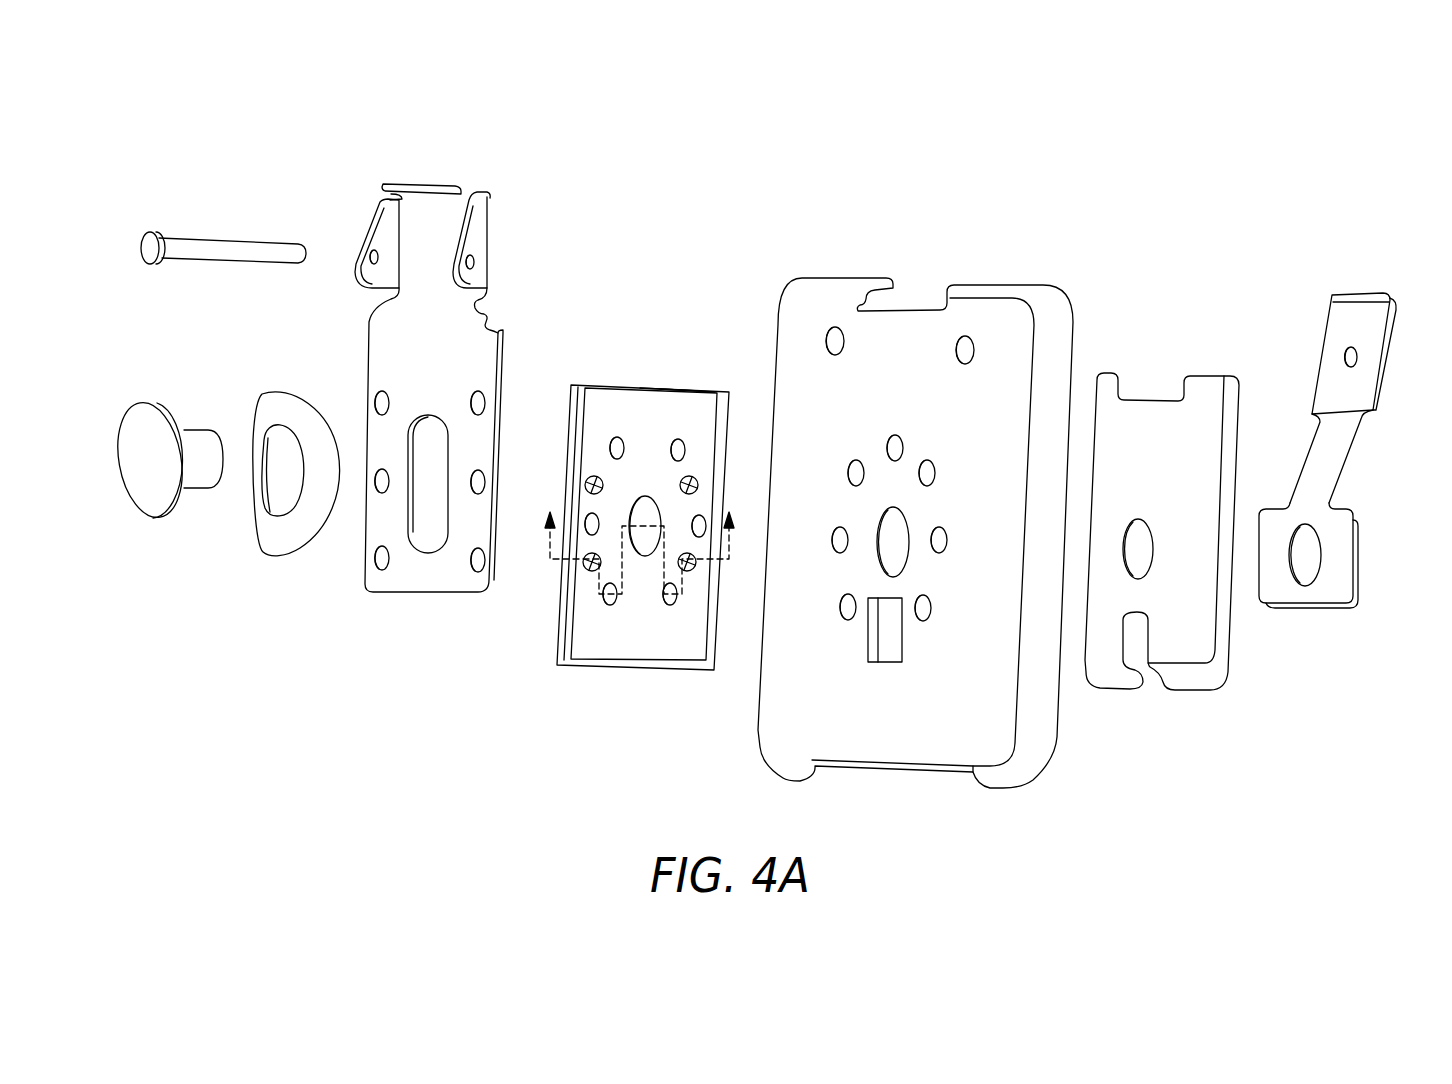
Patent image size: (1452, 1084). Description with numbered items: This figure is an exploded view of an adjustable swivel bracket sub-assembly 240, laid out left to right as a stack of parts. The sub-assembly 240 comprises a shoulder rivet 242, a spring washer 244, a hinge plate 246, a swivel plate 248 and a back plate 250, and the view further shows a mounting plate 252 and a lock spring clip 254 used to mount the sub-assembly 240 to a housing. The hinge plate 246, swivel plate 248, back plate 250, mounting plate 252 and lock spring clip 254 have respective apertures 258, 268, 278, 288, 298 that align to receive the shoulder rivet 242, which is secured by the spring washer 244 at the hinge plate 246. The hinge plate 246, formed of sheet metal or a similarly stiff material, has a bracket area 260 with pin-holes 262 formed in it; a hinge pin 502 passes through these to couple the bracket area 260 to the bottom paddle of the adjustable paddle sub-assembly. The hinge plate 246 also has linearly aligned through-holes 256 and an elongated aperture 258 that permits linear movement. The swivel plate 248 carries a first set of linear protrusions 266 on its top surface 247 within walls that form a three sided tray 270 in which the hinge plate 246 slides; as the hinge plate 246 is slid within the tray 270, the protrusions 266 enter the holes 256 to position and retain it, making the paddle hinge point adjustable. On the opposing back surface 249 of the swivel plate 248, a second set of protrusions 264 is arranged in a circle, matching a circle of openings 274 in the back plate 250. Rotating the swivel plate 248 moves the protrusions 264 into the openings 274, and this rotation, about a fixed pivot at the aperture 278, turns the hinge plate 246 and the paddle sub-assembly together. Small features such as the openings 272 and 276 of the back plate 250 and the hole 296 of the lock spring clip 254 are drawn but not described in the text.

The adjustable swivel bracket sub-assembly 240 is at (1266, 862).
The shoulder rivet 242 is at (160, 400).
The spring washer 244 is at (264, 396).
The hinge plate 246 is at (428, 184).
The top surface 247 is at (624, 396).
The swivel plate 248 is at (678, 387).
The back surface 249 is at (659, 385).
The back plate 250 is at (862, 278).
The mounting plate 252 is at (1208, 376).
The lock spring clip 254 is at (1350, 293).
The through-holes 256 is at (369, 563).
The aperture 258 is at (425, 540).
The bracket area 260 is at (482, 214).
The pin-holes 262 is at (477, 263).
The second set of protrusions 264 is at (620, 438).
The first set of linear protrusions 266 is at (589, 568).
The aperture 268 is at (643, 496).
The three sided tray 270 is at (580, 399).
The housing hole 272 is at (963, 338).
The openings 274 is at (850, 615).
The rectangular opening 276 is at (900, 660).
The aperture 278 is at (897, 548).
The aperture 288 is at (1145, 550).
The arm hole 296 is at (1362, 358).
The aperture 298 is at (1305, 560).
The hinge pin 502 is at (216, 240).